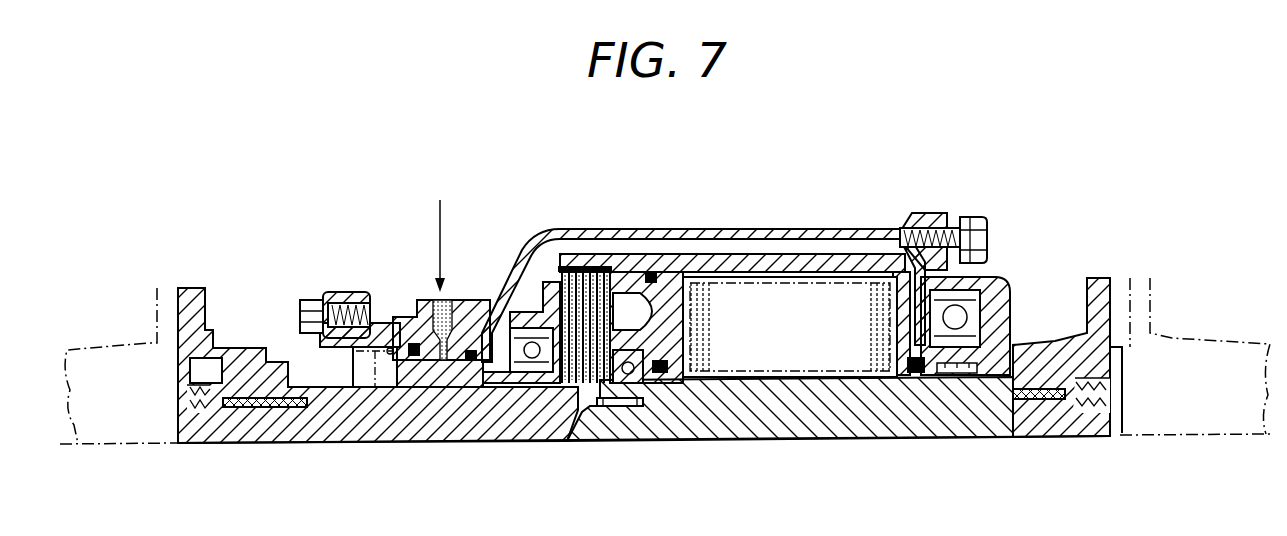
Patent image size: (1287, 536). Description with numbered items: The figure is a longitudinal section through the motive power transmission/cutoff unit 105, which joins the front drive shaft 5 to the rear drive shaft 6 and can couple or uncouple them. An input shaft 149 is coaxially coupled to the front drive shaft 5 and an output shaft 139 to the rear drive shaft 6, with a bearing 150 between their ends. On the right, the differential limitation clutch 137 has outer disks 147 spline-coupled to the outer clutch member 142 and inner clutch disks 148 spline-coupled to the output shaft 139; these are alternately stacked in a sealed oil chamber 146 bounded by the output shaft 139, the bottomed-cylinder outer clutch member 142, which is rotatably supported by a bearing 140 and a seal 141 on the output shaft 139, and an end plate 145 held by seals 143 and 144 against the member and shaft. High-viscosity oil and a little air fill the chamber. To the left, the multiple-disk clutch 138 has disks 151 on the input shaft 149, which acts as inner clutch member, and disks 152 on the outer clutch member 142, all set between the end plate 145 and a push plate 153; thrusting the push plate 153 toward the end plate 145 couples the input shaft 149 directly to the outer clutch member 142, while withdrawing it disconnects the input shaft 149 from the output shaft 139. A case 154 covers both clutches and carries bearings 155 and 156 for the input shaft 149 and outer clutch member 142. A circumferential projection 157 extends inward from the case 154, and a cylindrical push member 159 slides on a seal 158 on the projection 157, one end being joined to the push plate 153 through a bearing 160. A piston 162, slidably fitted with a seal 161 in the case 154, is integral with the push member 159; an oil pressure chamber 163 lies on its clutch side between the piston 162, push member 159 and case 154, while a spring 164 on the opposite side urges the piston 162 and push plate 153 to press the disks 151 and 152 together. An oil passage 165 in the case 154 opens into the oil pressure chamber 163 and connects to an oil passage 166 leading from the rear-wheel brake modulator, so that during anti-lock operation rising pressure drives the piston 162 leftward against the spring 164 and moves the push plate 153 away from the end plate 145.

The front drive shaft 5 is at (118, 343).
The rear drive shaft 6 is at (1183, 340).
The motive power transmission/cutoff unit 105 is at (701, 170).
The differential limitation clutch 137 is at (735, 276).
The multiple-disk clutch 138 is at (689, 265).
The output shaft 139 is at (795, 410).
The bearing 140 is at (965, 378).
The seal 141 is at (916, 378).
The outer clutch member 142 is at (790, 262).
The seal 143 is at (651, 272).
The seal 144 is at (660, 376).
The end plate 145 is at (692, 336).
The sealed oil chamber 146 is at (790, 283).
The outer disks 147 is at (706, 314).
The inner clutch disks 148 is at (874, 324).
The input shaft 149 is at (250, 425).
The bearing 150 is at (624, 408).
The disks 151 is at (612, 384).
The disks 152 is at (545, 232).
The push plate 153 is at (517, 361).
The case 154 is at (740, 232).
The bearing 155 is at (338, 408).
The bearing 156 is at (1001, 293).
The projection 157 is at (502, 385).
The seal 158 is at (458, 388).
The push member 159 is at (481, 334).
The bearing 160 is at (540, 385).
The seal 161 is at (410, 342).
The piston 162 is at (418, 385).
The oil pressure chamber 163 is at (428, 388).
The spring 164 is at (376, 388).
The oil passage 165 is at (432, 300).
The oil passage 166 is at (447, 222).